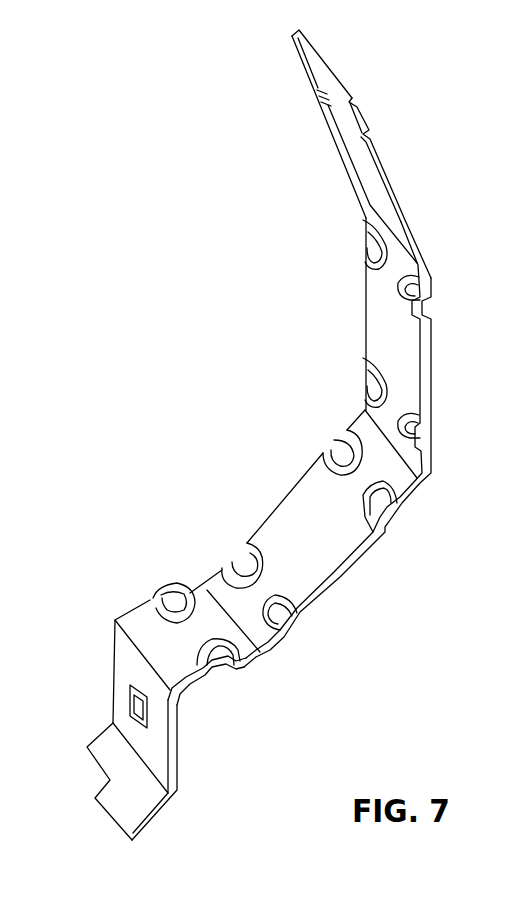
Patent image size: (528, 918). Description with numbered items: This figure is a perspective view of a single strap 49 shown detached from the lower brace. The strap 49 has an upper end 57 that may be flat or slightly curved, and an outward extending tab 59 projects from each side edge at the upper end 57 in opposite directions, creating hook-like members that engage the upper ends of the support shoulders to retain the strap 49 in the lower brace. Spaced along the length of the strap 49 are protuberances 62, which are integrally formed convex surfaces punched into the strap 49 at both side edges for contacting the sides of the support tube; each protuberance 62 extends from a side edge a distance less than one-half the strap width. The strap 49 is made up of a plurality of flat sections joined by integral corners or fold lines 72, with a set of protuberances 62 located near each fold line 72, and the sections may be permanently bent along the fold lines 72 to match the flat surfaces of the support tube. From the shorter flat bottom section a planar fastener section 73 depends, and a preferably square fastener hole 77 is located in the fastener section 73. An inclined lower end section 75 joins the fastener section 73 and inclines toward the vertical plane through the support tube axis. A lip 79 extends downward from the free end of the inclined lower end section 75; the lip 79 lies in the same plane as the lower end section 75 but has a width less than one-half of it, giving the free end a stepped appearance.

The strap 49 is at (446, 361).
The upper end 57 is at (323, 67).
The outward extending tab 59 is at (358, 117).
The protuberance 62 is at (383, 505).
The fold line 72 is at (182, 690).
The fastener section 73 is at (124, 663).
The inclined lower end section 75 is at (160, 817).
The fastener hole 77 is at (132, 703).
The lip 79 is at (123, 810).